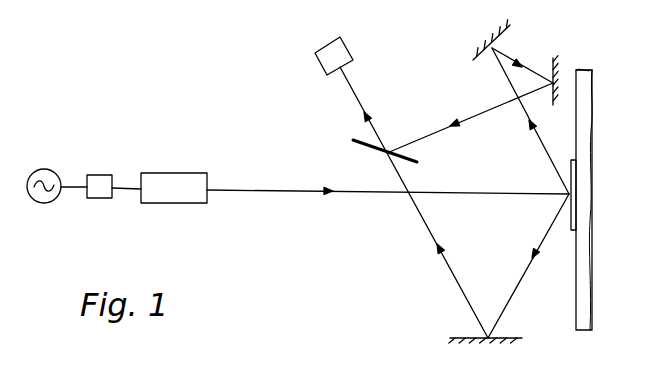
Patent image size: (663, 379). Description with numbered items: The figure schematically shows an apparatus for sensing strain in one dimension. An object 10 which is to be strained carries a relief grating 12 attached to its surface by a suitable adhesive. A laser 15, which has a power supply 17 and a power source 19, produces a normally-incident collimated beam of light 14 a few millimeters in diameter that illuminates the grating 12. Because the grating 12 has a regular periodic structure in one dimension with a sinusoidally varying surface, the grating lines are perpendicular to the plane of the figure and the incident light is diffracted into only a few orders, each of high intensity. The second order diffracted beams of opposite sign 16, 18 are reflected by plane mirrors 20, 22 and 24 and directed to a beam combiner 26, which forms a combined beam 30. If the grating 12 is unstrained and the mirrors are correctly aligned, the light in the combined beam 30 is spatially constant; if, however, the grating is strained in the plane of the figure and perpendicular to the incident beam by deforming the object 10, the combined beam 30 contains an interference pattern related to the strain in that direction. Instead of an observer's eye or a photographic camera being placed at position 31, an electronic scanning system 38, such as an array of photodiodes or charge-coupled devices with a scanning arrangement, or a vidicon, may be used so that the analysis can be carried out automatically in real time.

The object 10 is at (585, 312).
The relief grating 12 is at (568, 223).
The collimated beam of light 14 is at (257, 190).
The laser 15 is at (168, 173).
The second order diffracted beam 16 is at (536, 135).
The power supply 17 is at (98, 175).
The second order diffracted beam 18 is at (523, 273).
The power source 19 is at (51, 169).
The plane mirror 20 is at (553, 66).
The plane mirror 22 is at (474, 61).
The plane mirror 24 is at (467, 338).
The beam combiner 26 is at (353, 143).
The combined beam 30 is at (350, 85).
The position 31 is at (337, 76).
The electronic scanning system 38 is at (317, 53).